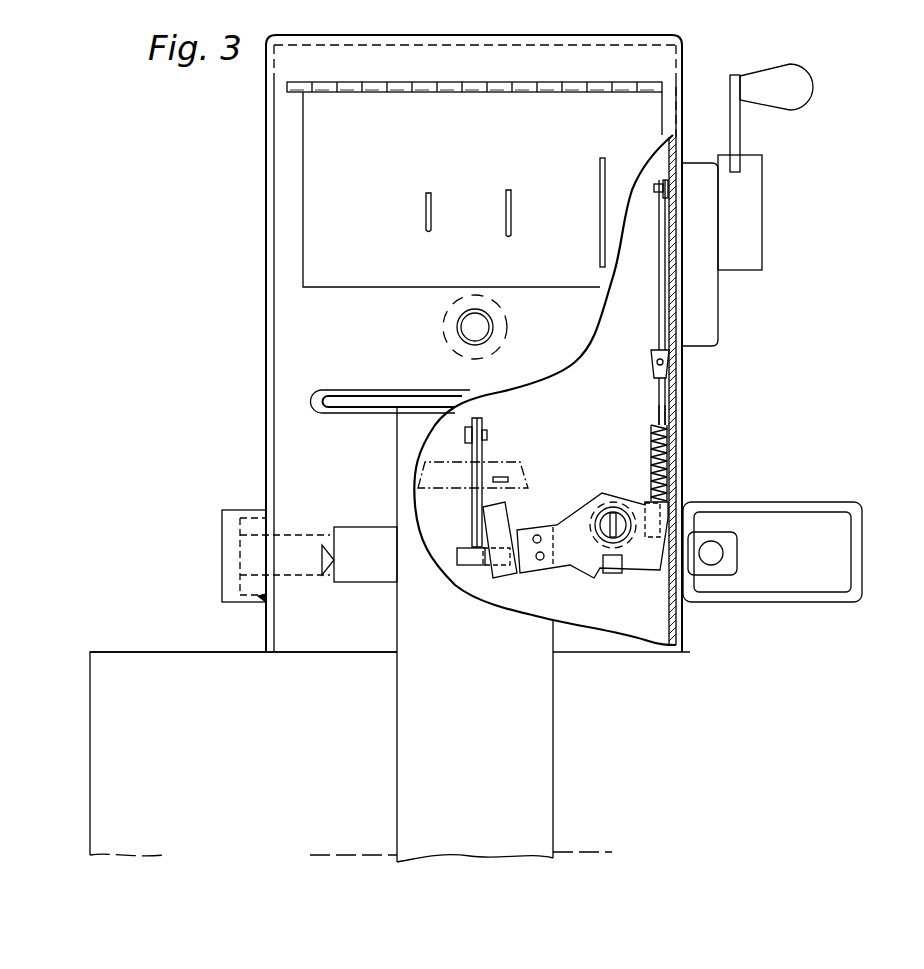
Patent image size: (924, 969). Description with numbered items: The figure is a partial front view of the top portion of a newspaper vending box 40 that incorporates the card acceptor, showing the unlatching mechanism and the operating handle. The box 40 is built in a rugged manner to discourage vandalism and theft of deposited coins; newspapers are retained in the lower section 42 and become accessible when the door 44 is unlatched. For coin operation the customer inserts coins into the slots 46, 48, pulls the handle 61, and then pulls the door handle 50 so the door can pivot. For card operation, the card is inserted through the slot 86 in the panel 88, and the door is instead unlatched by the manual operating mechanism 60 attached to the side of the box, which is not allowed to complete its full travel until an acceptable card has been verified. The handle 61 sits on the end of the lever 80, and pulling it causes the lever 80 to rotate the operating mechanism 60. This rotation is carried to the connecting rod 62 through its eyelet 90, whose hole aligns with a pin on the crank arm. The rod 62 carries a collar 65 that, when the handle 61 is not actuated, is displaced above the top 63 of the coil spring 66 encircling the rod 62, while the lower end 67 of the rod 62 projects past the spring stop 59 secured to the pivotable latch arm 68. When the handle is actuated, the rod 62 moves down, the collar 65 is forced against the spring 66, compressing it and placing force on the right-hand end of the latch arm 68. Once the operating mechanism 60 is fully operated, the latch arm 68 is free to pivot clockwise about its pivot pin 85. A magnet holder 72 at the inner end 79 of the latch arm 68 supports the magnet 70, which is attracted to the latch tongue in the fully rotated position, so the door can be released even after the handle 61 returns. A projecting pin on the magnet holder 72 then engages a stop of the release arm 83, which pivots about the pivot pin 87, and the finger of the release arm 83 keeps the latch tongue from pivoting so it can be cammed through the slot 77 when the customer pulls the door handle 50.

The vending box 40 is at (266, 414).
The lower section 42 is at (177, 650).
The door 44 is at (220, 714).
The coin slot 46 is at (428, 232).
The coin slot 48 is at (508, 237).
The door handle 50 is at (368, 411).
The spring stop 59 is at (686, 505).
The operating mechanism 60 is at (776, 220).
The handle 61 is at (810, 88).
The connecting rod 62 is at (658, 306).
The top of coil spring 63 is at (652, 425).
The collar 65 is at (650, 353).
The coil spring 66 is at (652, 437).
The lower end of rod 67 is at (660, 515).
The latch arm 68 is at (630, 560).
The magnet 70 is at (500, 498).
The magnet holder 72 is at (505, 570).
The slot 77 is at (528, 473).
The inner end of latch arm 79 is at (495, 529).
The lever 80 is at (741, 129).
The release arm 83 is at (478, 452).
The pivot pin 85 is at (596, 503).
The card slot 86 is at (601, 252).
The pivot pin 87 is at (488, 434).
The panel 88 is at (382, 169).
The eyelet 90 is at (660, 183).